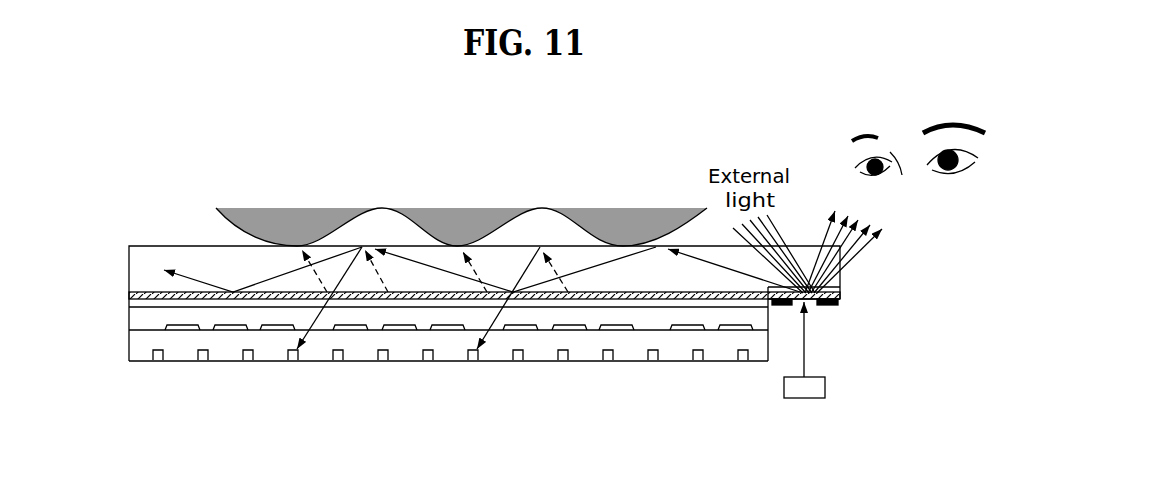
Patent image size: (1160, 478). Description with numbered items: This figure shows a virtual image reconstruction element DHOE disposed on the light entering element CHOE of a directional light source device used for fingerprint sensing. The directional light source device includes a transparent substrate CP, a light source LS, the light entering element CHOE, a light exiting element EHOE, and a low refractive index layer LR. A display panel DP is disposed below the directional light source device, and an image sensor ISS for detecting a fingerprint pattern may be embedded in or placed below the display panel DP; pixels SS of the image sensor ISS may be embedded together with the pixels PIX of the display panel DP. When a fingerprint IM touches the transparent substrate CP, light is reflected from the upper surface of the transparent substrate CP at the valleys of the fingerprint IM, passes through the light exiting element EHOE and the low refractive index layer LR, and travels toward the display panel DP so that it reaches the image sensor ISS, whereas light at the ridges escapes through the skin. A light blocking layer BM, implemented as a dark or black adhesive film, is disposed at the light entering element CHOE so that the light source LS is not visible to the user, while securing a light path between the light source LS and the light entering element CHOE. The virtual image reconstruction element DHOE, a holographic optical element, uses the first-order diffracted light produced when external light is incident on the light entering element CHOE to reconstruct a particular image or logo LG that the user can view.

The fingerprint IM is at (240, 225).
The transparent substrate CP is at (138, 271).
The low refractive index layer LR is at (138, 297).
The display panel DP is at (138, 320).
The image sensor ISS is at (138, 347).
The pixel PIX is at (185, 331).
The pixel of the image sensor SS is at (293, 361).
The light exiting element EHOE is at (713, 308).
The light blocking layer BM is at (784, 306).
The light source LS is at (805, 398).
The virtual image reconstruction element DHOE is at (833, 290).
The light entering element CHOE is at (835, 299).
The line of gaze LG is at (918, 170).